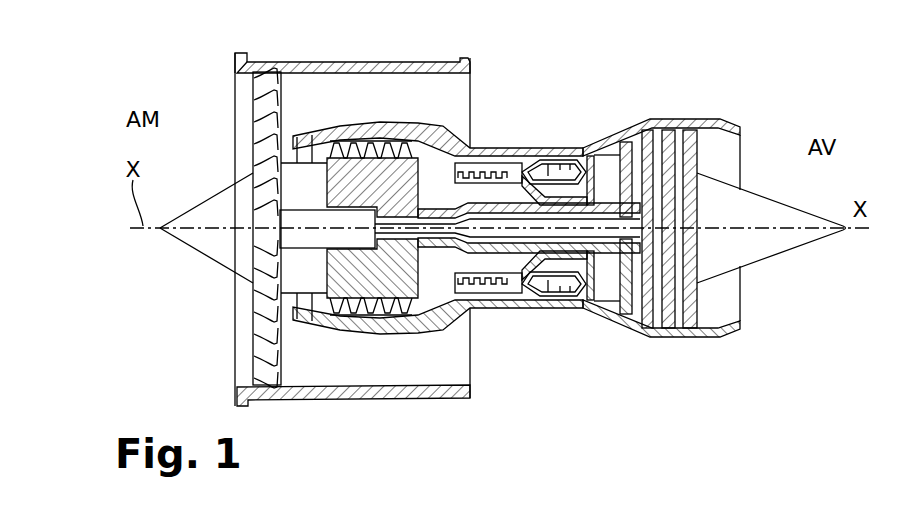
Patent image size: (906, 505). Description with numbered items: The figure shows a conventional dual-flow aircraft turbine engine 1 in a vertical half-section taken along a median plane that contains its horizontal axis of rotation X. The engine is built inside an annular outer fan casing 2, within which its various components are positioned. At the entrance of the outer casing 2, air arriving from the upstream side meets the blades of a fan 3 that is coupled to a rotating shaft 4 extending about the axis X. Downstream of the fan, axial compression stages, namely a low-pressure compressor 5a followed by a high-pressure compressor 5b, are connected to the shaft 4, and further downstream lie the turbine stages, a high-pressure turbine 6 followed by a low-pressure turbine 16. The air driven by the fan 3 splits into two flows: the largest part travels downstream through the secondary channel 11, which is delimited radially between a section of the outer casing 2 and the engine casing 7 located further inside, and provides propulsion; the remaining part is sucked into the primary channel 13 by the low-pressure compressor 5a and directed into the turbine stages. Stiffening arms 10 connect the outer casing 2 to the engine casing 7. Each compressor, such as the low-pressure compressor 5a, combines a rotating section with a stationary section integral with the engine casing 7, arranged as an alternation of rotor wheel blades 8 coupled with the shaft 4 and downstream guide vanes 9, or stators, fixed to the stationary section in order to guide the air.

The dual-flow turbine engine 1 is at (503, 216).
The annular outer fan casing 2 is at (426, 62).
The fan 3 is at (253, 133).
The rotating shaft 4 is at (281, 212).
The low-pressure compressor 5a is at (445, 140).
The high-pressure compressor 5b is at (508, 167).
The high-pressure turbine 6 is at (620, 322).
The engine casing 7 is at (393, 125).
The blades 8 is at (330, 302).
The downstream guide vanes 9 is at (341, 299).
The stiffening arms 10 is at (342, 97).
The secondary channel 11 is at (447, 85).
The primary channel 13 is at (440, 163).
The low-pressure turbine 16 is at (695, 357).